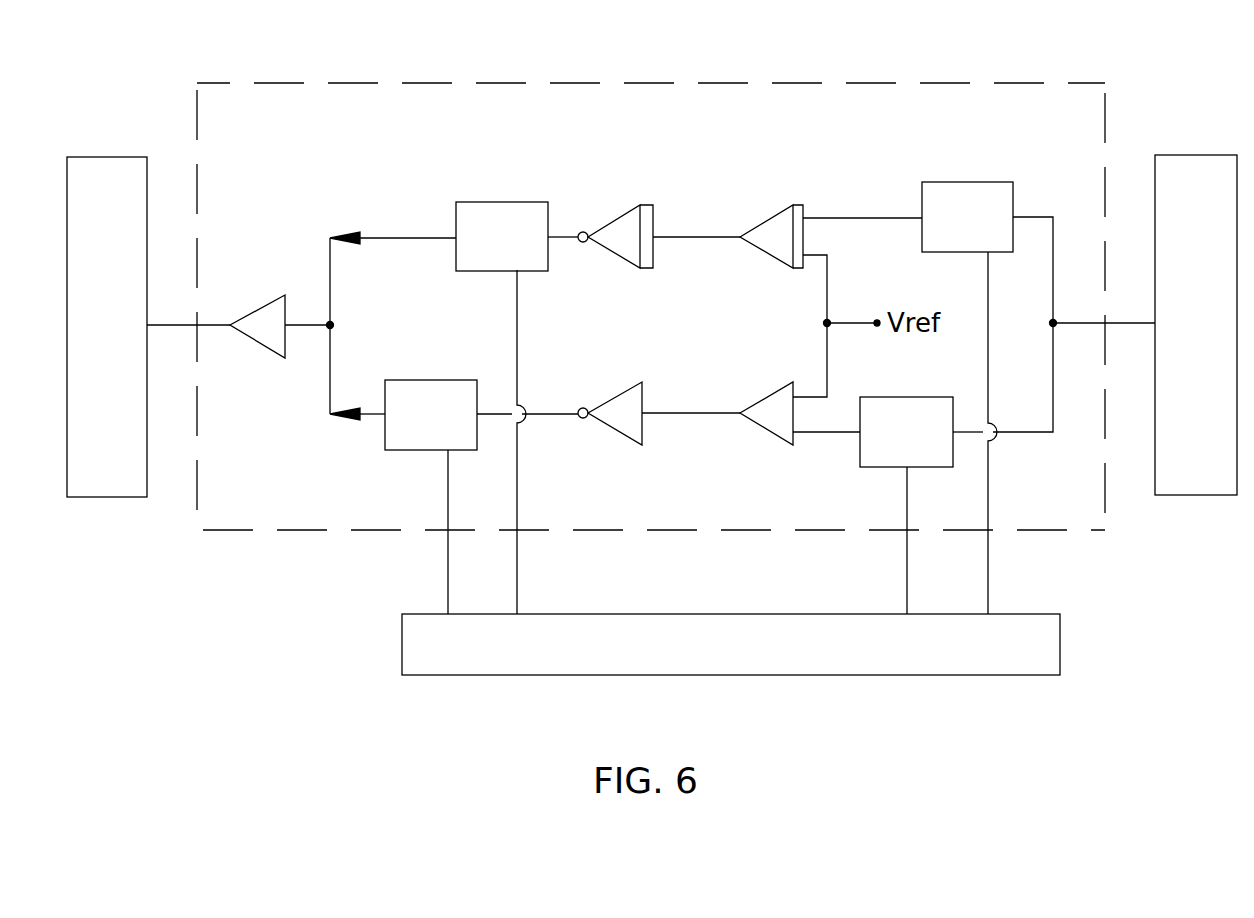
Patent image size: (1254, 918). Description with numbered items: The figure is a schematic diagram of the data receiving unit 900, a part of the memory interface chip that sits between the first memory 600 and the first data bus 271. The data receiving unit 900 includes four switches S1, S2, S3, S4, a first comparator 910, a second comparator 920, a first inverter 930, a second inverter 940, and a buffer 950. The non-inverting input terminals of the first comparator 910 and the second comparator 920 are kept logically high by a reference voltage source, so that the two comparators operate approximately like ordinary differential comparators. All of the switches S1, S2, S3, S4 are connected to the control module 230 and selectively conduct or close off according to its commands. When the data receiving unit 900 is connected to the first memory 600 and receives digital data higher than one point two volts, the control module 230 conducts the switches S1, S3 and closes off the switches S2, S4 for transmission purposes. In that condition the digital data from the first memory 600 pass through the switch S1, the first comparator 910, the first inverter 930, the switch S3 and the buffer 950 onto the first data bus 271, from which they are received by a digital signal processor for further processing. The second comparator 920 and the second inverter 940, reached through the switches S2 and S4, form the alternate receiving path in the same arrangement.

The data receiving unit 900 is at (947, 83).
The first comparator 910 is at (757, 227).
The second comparator 920 is at (757, 403).
The first inverter 930 is at (607, 225).
The second inverter 940 is at (607, 401).
The buffer 950 is at (257, 310).
The first data bus 271 is at (87, 389).
The first memory 600 is at (1176, 362).
The control module 230 is at (853, 657).
The switch S1 is at (952, 230).
The switch S2 is at (891, 445).
The switch S3 is at (487, 249).
The switch S4 is at (416, 428).